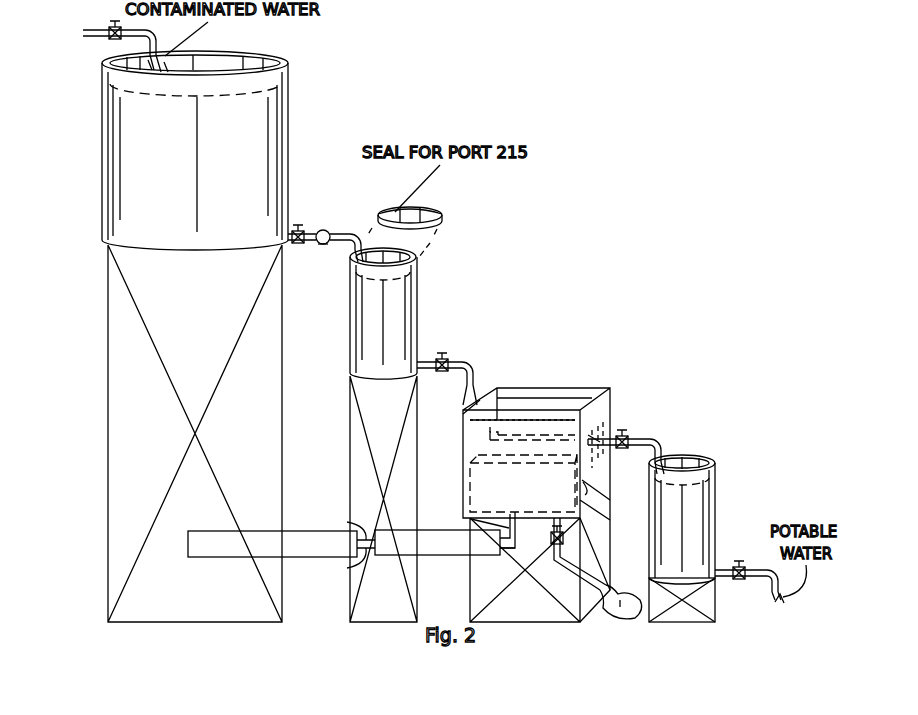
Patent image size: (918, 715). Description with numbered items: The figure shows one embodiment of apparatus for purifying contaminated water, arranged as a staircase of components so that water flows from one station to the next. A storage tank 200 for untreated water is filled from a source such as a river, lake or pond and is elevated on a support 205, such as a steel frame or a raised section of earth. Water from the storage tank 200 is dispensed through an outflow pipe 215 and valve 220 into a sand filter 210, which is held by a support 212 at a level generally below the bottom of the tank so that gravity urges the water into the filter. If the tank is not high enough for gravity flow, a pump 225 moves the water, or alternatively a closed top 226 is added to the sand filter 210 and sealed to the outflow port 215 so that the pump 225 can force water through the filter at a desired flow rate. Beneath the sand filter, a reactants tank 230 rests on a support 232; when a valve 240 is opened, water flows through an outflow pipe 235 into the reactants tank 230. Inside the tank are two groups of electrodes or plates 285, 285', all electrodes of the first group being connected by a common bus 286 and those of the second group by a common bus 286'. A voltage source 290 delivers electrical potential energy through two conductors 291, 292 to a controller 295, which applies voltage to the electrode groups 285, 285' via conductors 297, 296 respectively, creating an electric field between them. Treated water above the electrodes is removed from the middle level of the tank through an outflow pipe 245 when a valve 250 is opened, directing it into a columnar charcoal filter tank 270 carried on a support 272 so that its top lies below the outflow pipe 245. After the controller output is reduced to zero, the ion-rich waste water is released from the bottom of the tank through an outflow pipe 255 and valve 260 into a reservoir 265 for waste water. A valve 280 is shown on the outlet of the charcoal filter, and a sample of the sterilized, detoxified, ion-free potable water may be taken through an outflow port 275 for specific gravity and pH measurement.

The storage tank 200 is at (289, 100).
The support 205 is at (283, 305).
The sand filter 210 is at (418, 273).
The support 212 is at (349, 430).
The outflow pipe 215 is at (298, 228).
The valve 220 is at (318, 232).
The pump 225 is at (322, 248).
The closed top 226 is at (436, 211).
The reactants tank 230 is at (585, 388).
The support 232 is at (469, 612).
The outflow pipe 235 is at (425, 362).
The valve 240 is at (449, 363).
The outflow pipe 245 is at (601, 440).
The valve 250 is at (631, 440).
The outflow pipe 255 is at (554, 527).
The valve 260 is at (568, 537).
The reservoir 265 is at (606, 615).
The charcoal filter tank 270 is at (716, 472).
The support 272 is at (716, 620).
The outflow port 275 is at (727, 568).
The potable water valve 280 is at (740, 579).
The electrode group 285 is at (501, 501).
The electrode group 285' is at (500, 482).
The common bus 286 is at (614, 500).
The common bus 286' is at (620, 448).
The voltage source 290 is at (300, 530).
The conductor 291 is at (342, 524).
The conductor 292 is at (342, 563).
The controller 295 is at (445, 558).
The conductor 296 is at (471, 521).
The conductor 297 is at (554, 549).